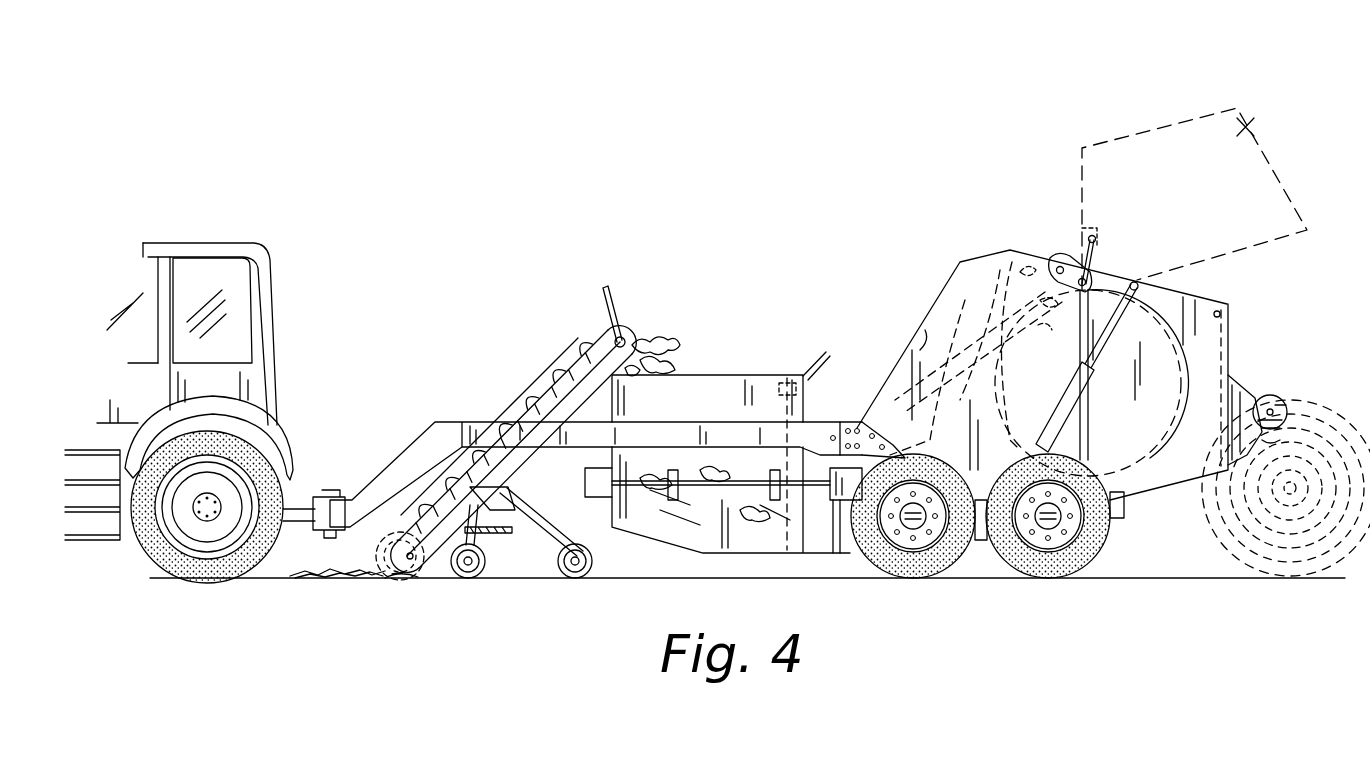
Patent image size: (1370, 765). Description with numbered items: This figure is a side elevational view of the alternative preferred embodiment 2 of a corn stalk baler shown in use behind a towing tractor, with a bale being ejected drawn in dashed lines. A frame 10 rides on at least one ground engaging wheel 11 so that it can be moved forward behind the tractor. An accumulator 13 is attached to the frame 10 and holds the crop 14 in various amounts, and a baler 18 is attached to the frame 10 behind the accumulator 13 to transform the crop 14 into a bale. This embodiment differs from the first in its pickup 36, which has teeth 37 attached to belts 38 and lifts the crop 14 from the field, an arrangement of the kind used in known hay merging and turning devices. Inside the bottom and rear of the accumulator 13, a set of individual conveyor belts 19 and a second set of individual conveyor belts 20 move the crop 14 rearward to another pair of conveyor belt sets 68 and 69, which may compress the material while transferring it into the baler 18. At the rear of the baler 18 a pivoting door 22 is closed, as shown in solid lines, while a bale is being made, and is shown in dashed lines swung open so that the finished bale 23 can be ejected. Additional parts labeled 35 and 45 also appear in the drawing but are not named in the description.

The preferred embodiment of a corn stalk baler 2 is at (686, 206).
The frame 10 is at (813, 423).
The ground engaging wheel 11 is at (906, 580).
The accumulator 13 is at (712, 380).
The crop 14 is at (333, 580).
The baler 18 is at (993, 256).
The set of individual conveyor belts 19 is at (708, 517).
The second set of individual conveyor belts 20 is at (788, 377).
The pivoting door 22 is at (1247, 126).
The bale 23 is at (1302, 398).
The gauge wheels 35 is at (478, 580).
The pickup 36 is at (428, 583).
The teeth 37 is at (405, 578).
The belts 38 is at (592, 352).
The drive shaft 45 is at (757, 487).
The conveyor belt set 68 is at (810, 547).
The conveyor belt set 69 is at (840, 560).